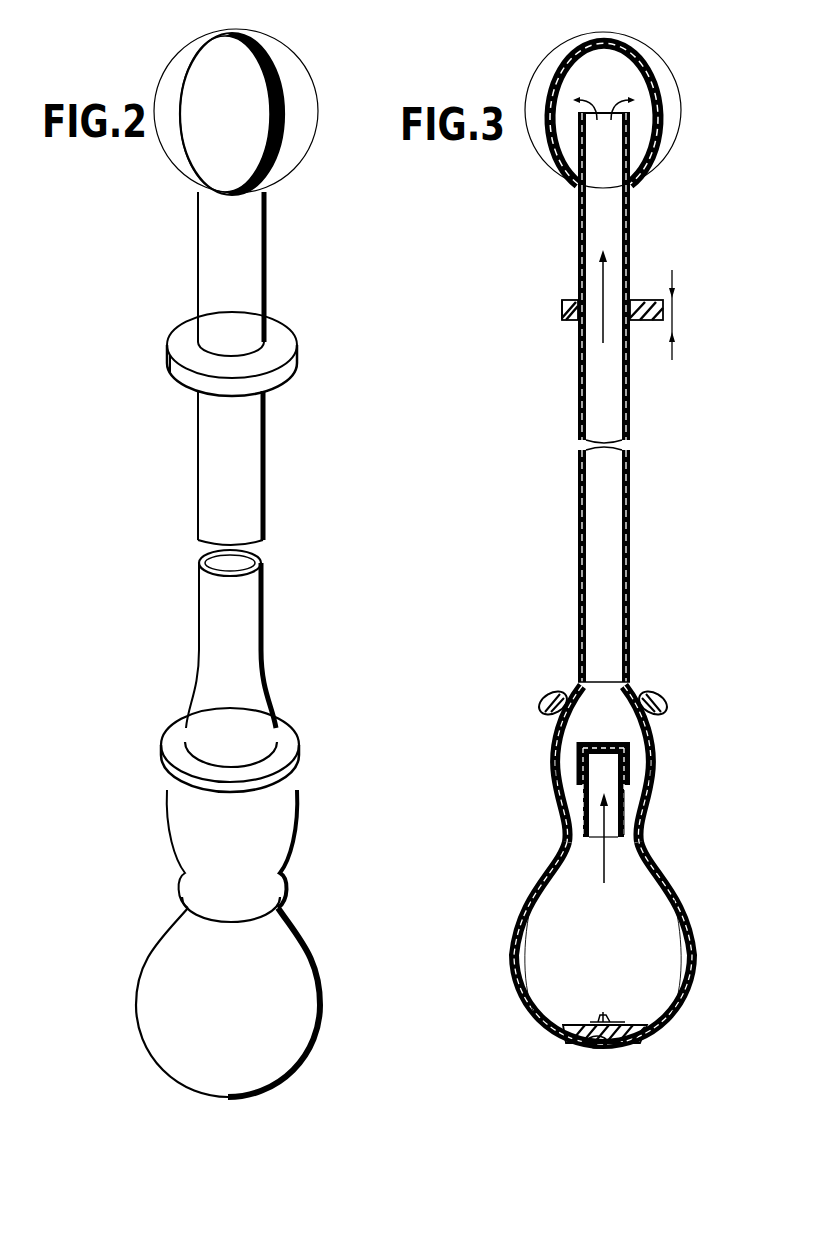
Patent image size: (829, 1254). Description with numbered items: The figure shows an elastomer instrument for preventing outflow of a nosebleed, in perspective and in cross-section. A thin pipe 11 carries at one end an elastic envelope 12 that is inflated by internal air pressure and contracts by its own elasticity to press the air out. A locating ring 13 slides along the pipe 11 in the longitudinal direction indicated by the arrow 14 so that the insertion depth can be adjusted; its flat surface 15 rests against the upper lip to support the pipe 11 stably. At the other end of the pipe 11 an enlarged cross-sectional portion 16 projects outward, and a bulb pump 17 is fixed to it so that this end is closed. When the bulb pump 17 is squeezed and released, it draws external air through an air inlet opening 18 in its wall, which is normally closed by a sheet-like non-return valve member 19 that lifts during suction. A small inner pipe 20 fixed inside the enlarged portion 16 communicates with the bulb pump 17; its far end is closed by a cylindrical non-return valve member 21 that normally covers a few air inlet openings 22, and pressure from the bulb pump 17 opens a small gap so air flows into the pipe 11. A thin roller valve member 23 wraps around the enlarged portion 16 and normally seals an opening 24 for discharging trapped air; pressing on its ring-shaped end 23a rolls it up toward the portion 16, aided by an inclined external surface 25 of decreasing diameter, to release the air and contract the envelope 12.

In FIG. 2, the pipe 11 is at (247, 243).
In FIG. 3, the pipe 11 is at (632, 250).
In FIG. 2, the envelope 12 is at (277, 163).
In FIG. 3, the envelope 12 is at (655, 147).
In FIG. 2, the locating ring 13 is at (282, 318).
In FIG. 3, the locating ring 13 is at (655, 300).
In FIG. 3, the arrow 14 is at (674, 313).
In FIG. 2, the flat surface 15 is at (182, 367).
In FIG. 3, the flat surface 15 is at (562, 312).
In FIG. 3, the enlarged cross-sectional portion 16 is at (630, 765).
In FIG. 2, the bulb pump 17 is at (305, 950).
In FIG. 3, the bulb pump 17 is at (690, 908).
In FIG. 3, the air inlet opening 18 is at (600, 1050).
In FIG. 3, the non-return valve member 19 is at (603, 1020).
In FIG. 3, the inner pipe 20 is at (628, 792).
In FIG. 3, the non-return valve member 21 is at (651, 775).
In FIG. 3, the air inlet openings 22 is at (577, 772).
In FIG. 2, the roller valve member 23 is at (297, 790).
In FIG. 3, the roller valve member 23 is at (555, 733).
In FIG. 2, the ring-shaped end 23a is at (296, 718).
In FIG. 3, the ring-shaped end 23a is at (578, 684).
In FIG. 3, the opening 24 is at (555, 750).
In FIG. 3, the inclined external surface 25 is at (650, 725).